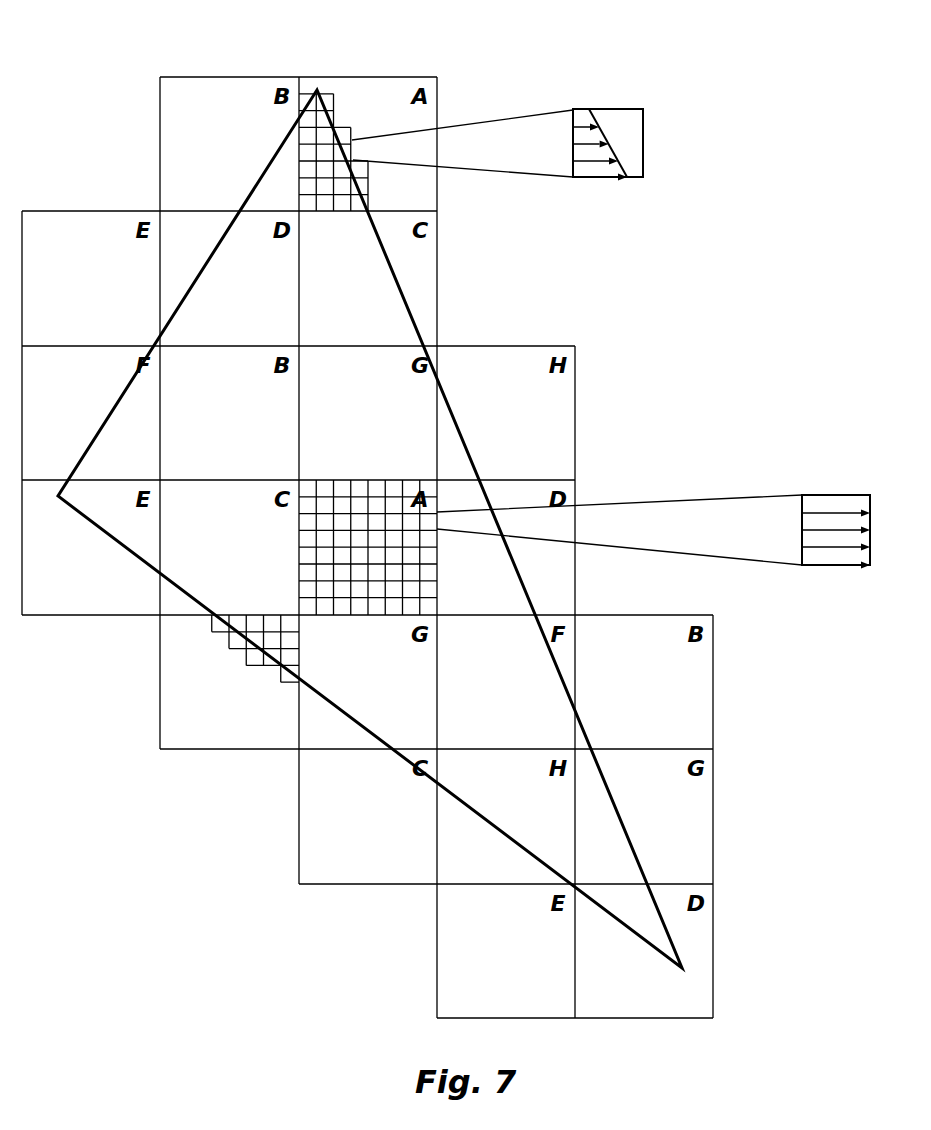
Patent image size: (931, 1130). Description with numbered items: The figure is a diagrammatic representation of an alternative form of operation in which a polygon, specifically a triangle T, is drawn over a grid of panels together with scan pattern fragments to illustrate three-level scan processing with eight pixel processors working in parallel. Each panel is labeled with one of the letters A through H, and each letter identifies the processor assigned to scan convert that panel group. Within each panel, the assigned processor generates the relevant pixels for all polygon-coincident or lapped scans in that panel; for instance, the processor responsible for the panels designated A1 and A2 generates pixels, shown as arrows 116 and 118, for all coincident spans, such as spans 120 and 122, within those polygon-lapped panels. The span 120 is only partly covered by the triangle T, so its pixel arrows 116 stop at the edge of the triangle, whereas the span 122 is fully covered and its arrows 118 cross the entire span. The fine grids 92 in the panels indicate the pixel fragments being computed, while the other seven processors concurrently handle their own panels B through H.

The pixel grid cells 92 is at (342, 115).
The arrows 116 is at (580, 125).
The span 120 is at (643, 133).
The arrows 118 is at (838, 510).
The span 122 is at (870, 543).
The triangle T is at (445, 397).
The panel A1 is at (430, 193).
The panel A2 is at (430, 590).